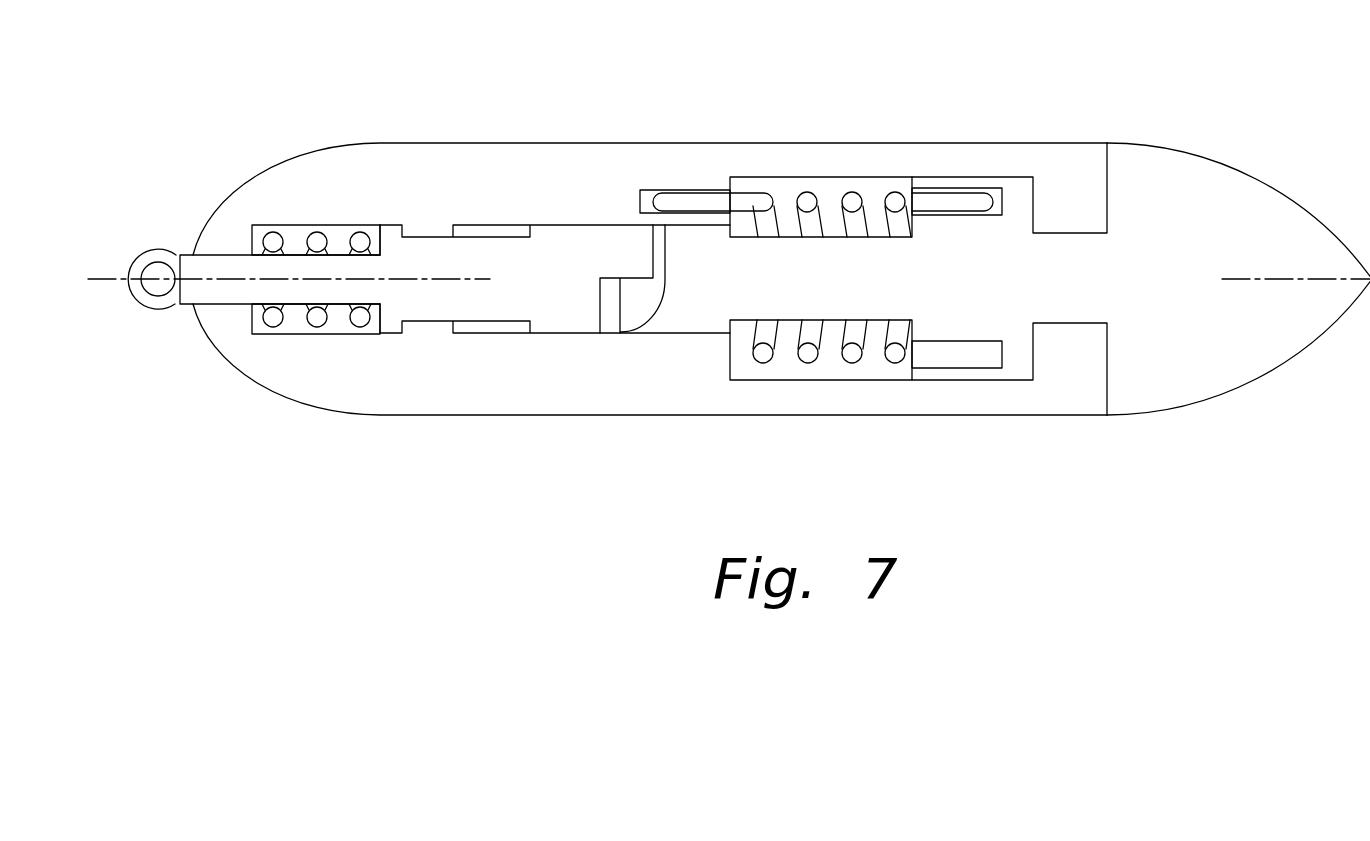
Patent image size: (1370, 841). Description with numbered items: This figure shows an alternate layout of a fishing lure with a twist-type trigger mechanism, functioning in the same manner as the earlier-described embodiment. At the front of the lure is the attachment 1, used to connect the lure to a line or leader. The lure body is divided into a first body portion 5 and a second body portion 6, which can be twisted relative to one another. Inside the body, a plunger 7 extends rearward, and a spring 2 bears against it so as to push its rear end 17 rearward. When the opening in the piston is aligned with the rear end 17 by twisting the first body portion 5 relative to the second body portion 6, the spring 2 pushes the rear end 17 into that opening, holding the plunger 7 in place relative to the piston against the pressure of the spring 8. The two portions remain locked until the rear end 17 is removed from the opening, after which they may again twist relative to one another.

The attachment 1 is at (141, 307).
The spring 2 is at (280, 240).
The first body portion 5 is at (620, 155).
The second body portion 6 is at (1190, 337).
The plunger 7 is at (432, 262).
The spring 8 is at (807, 202).
The rear end of the plunger 17 is at (633, 245).